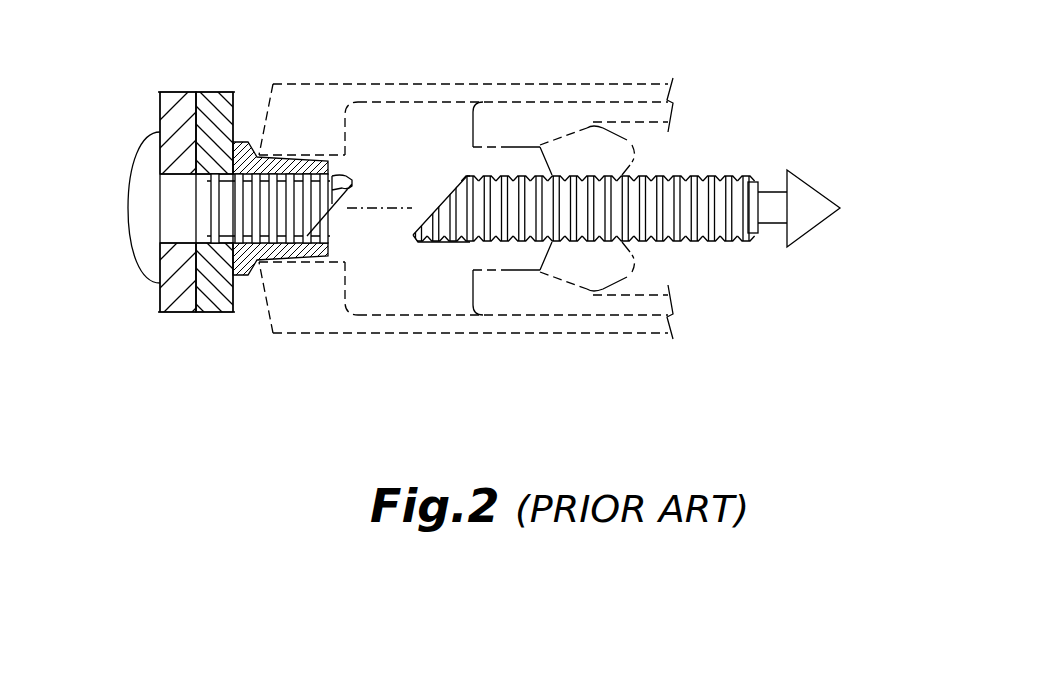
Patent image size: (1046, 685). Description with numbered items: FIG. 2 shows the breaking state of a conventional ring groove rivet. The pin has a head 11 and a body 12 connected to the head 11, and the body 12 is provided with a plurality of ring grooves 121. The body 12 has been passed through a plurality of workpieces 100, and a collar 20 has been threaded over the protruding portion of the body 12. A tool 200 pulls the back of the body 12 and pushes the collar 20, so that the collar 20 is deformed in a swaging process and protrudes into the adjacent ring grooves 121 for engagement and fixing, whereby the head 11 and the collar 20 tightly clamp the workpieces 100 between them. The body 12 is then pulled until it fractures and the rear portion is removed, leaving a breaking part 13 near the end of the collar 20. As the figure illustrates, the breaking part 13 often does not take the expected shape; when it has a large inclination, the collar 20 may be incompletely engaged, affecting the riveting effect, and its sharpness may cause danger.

The workpieces 100 is at (160, 102).
The head 11 is at (135, 193).
The collar 20 is at (268, 261).
The ring grooves 121 is at (308, 160).
The breaking part 13 is at (350, 190).
The tool 200 is at (507, 84).
The body 12 is at (658, 188).